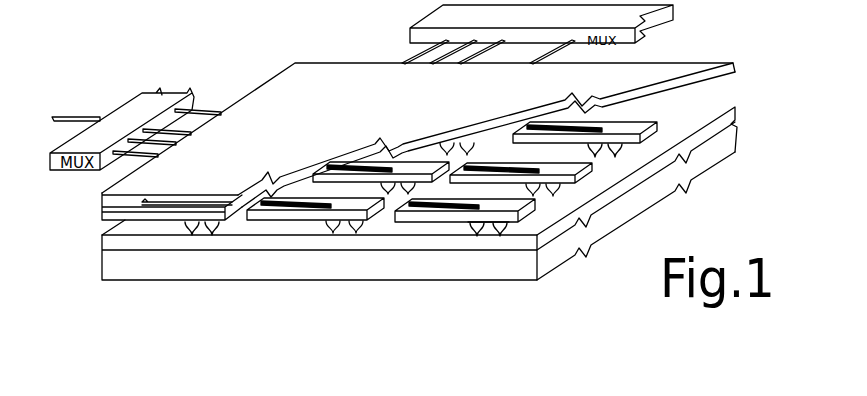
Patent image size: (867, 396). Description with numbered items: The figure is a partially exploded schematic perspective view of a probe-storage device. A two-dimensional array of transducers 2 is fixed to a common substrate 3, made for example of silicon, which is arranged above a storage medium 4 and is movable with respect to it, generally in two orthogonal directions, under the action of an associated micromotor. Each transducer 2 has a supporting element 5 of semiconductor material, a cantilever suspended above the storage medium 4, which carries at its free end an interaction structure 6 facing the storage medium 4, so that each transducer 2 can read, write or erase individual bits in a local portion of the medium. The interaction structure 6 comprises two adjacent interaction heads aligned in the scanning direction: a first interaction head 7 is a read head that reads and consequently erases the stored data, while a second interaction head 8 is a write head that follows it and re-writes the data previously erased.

The transducer 2 is at (304, 227).
The common substrate 3 is at (673, 70).
The storage medium 4 is at (736, 107).
The supporting element 5 is at (417, 223).
The interaction structure 6 is at (493, 229).
The first interaction head 7 is at (507, 224).
The second interaction head 8 is at (480, 223).